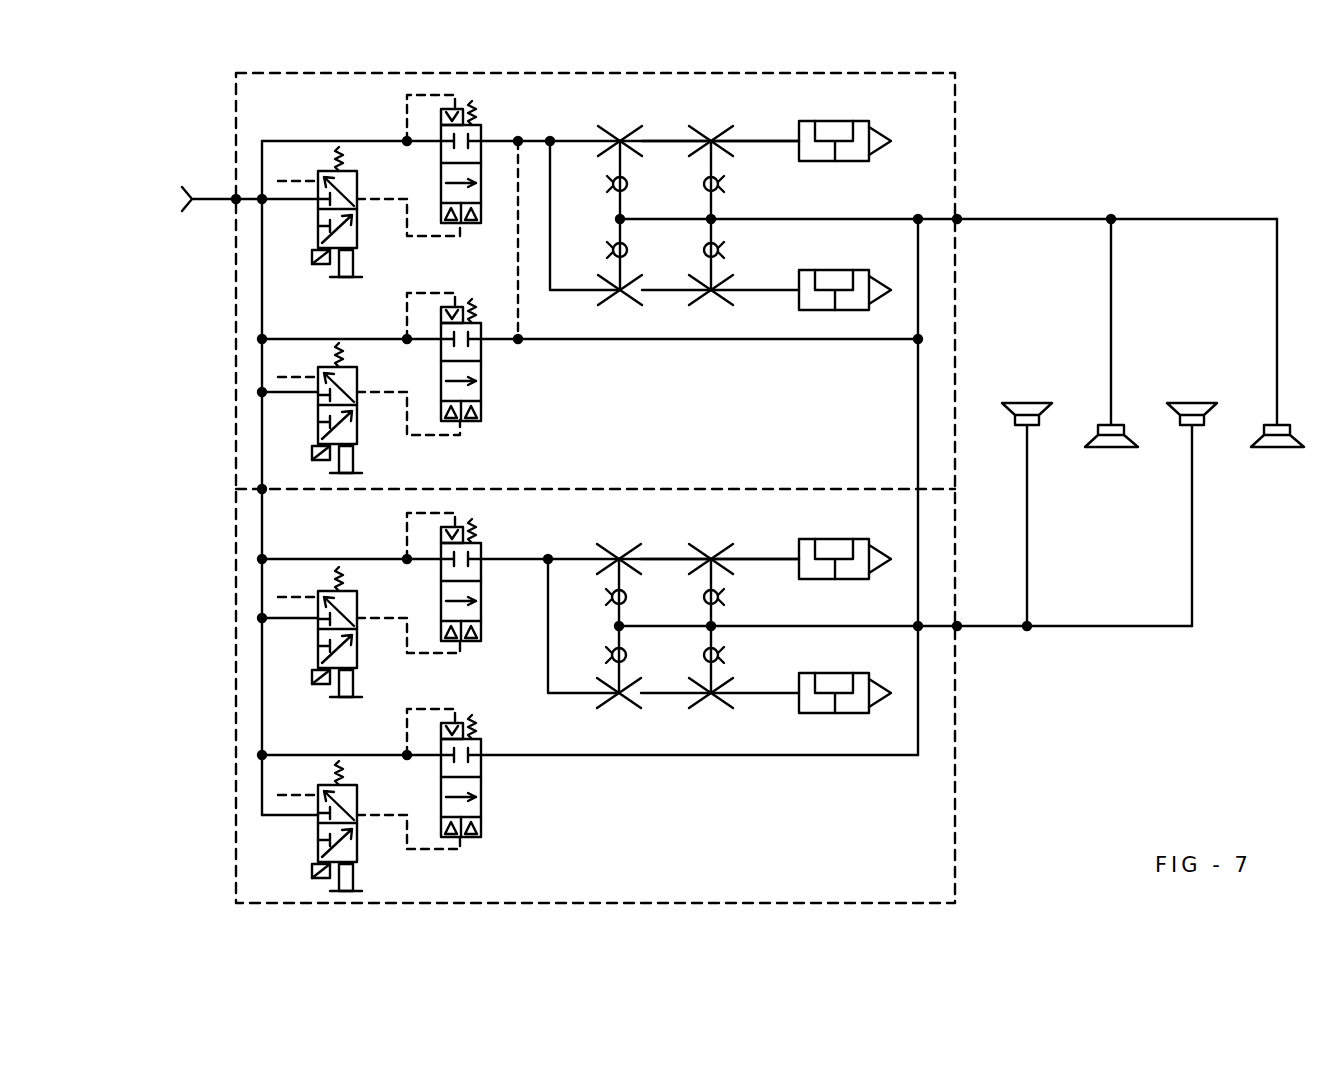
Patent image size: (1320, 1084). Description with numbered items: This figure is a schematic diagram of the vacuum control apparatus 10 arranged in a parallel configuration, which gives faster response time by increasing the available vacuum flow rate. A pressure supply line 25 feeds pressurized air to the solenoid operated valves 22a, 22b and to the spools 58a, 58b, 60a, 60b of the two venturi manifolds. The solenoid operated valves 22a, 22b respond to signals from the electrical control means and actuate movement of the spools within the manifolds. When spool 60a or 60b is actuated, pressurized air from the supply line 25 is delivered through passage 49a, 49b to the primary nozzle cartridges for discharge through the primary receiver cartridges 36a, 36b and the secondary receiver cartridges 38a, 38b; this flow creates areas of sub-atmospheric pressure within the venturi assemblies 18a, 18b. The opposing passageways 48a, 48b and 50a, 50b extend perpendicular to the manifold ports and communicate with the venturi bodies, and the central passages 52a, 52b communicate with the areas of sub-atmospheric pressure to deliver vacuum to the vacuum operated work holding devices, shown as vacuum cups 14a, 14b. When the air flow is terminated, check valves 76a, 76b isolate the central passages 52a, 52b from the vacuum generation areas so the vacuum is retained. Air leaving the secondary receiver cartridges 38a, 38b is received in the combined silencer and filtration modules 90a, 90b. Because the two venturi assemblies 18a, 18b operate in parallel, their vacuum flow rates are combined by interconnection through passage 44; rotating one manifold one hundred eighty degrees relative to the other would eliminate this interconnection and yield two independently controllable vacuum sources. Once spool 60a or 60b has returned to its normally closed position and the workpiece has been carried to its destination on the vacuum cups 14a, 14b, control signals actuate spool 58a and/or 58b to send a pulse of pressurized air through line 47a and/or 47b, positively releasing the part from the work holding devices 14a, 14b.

The vacuum control apparatus 10 is at (1022, 124).
The vacuum operated work holding device 14a is at (1122, 450).
The vacuum operated work holding device 14b is at (1020, 400).
The venturi assembly 18a is at (795, 359).
The venturi assembly 18b is at (870, 779).
The solenoid operated valve 22a is at (360, 245).
The solenoid operated valve 22b is at (362, 664).
The pressure supply line 25 is at (212, 196).
The primary receiver cartridge 36a is at (612, 132).
The primary receiver cartridge 36b is at (610, 552).
The secondary receiver cartridge 38a is at (708, 132).
The secondary receiver cartridge 38b is at (706, 552).
The passage 44 is at (918, 456).
The passage 47a is at (692, 340).
The passage 47b is at (782, 756).
The opposing passageway 48a is at (626, 190).
The opposing passageway 48b is at (612, 622).
The passage 49a is at (552, 291).
The passage 49b is at (548, 660).
The opposing passageway 50a is at (626, 214).
The opposing passageway 50b is at (716, 614).
The central passage 52a is at (850, 219).
The central passage 52b is at (812, 626).
The spool 58a is at (481, 385).
The spool 58b is at (481, 803).
The spool 60a is at (478, 133).
The spool 60b is at (480, 552).
The check valve 76a is at (610, 184).
The check valve 76b is at (712, 648).
The combined silencer and filtration module 90a is at (830, 122).
The combined silencer and filtration module 90b is at (822, 539).